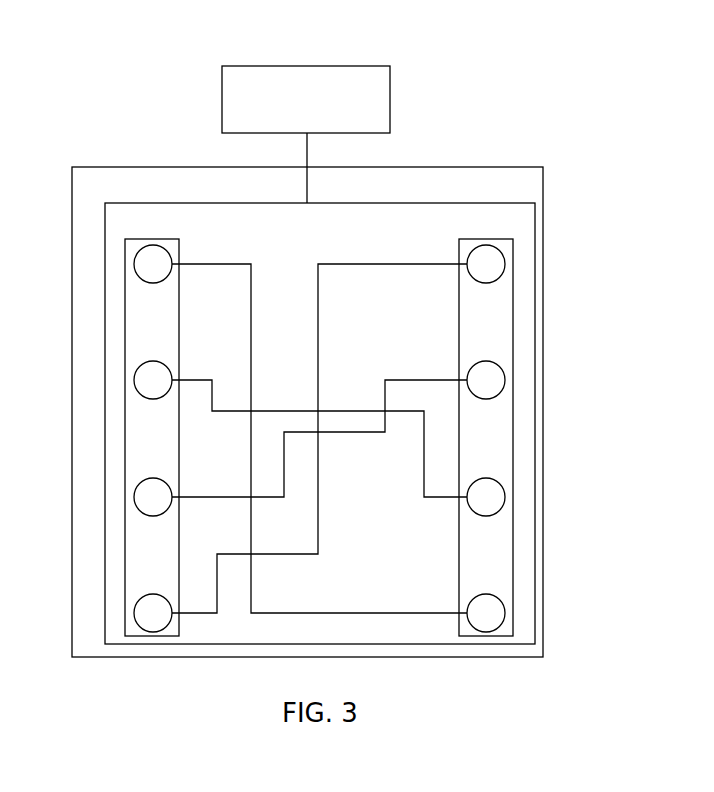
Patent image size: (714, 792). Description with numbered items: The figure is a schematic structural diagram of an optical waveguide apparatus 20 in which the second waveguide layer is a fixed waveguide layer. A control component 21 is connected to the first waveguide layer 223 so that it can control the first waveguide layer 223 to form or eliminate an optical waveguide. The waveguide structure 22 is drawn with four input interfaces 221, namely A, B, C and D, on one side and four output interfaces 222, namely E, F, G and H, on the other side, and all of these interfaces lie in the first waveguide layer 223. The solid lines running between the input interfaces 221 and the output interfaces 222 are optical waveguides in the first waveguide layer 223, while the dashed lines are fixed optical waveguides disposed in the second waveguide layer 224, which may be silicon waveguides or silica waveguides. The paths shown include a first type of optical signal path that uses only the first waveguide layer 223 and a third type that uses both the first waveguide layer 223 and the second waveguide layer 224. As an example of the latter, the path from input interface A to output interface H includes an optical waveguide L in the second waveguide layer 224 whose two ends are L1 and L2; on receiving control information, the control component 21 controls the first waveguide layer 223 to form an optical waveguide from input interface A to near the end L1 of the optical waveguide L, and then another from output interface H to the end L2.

The optical waveguide apparatus 20 is at (95, 39).
The control component 21 is at (306, 134).
The waveguide structure 22 is at (307, 376).
The input interfaces 221 is at (124, 247).
The output interfaces 222 is at (514, 253).
The first waveguide layer 223 is at (320, 423).
The second waveguide layer 224 is at (307, 412).
The optical waveguide L is at (250, 460).
The end of optical waveguide L L1 is at (251, 406).
The end of optical waveguide L L2 is at (253, 562).